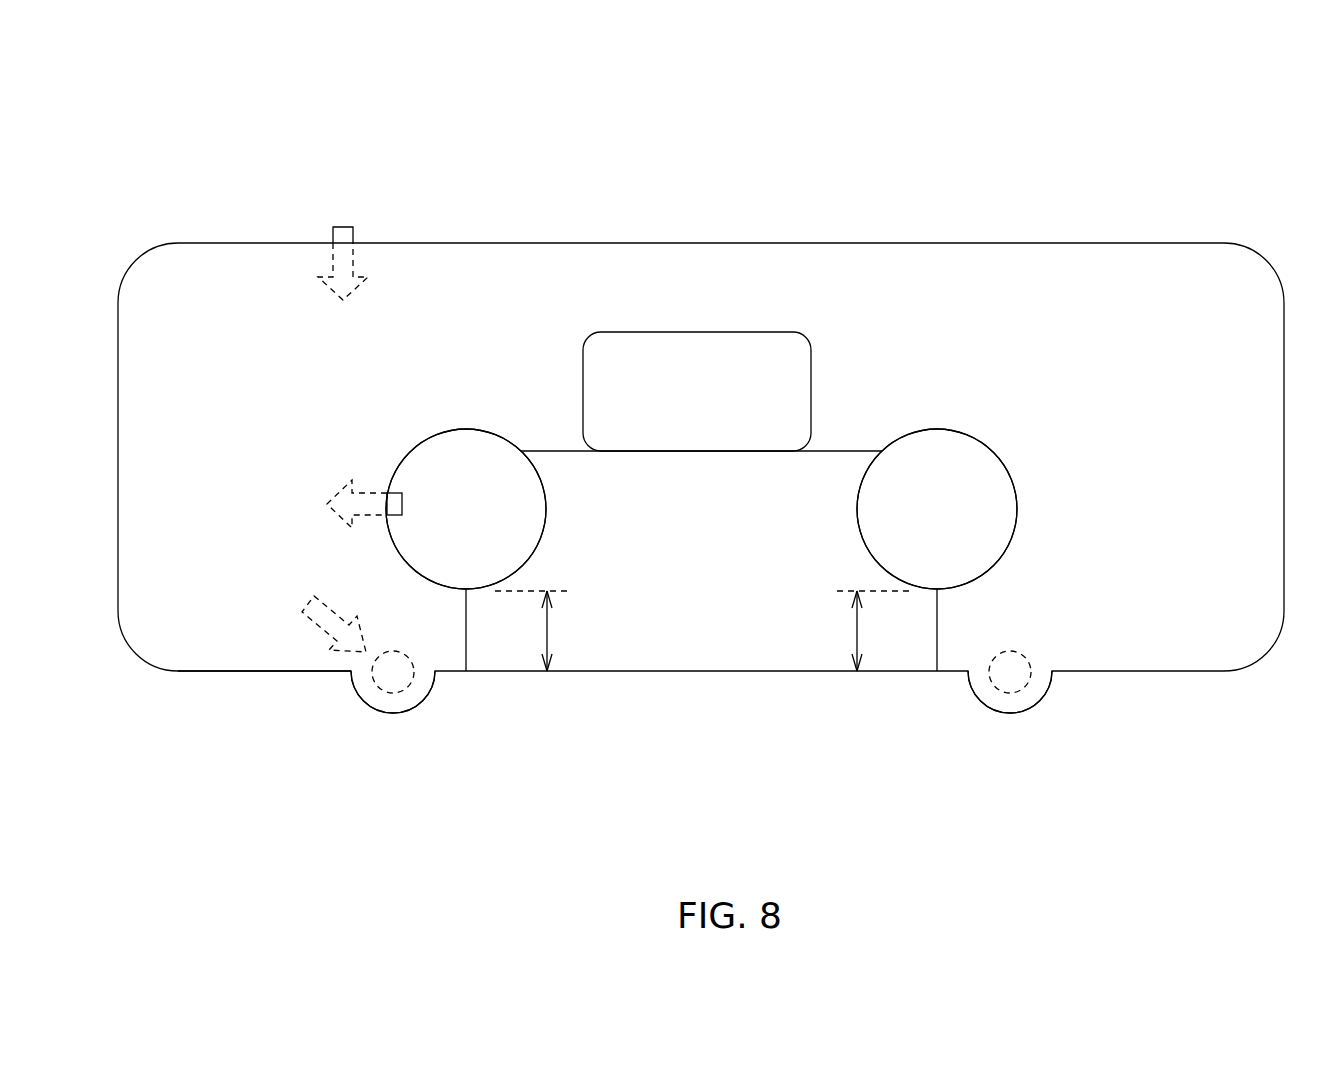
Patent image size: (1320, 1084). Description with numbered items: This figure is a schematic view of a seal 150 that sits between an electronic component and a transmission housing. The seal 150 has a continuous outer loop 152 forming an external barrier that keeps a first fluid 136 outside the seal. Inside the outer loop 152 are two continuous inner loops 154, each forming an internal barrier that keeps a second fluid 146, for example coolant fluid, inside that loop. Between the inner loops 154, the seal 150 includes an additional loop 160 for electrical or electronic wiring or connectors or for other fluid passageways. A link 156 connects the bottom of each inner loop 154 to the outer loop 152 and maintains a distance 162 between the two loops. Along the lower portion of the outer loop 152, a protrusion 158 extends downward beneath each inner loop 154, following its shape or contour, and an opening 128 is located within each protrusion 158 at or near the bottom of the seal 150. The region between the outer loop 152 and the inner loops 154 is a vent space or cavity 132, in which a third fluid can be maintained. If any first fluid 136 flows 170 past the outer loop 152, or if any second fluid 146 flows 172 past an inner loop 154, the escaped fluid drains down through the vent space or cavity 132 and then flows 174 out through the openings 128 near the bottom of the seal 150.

The seal 150 is at (347, 122).
The vent space or cavity 132 is at (960, 302).
The first fluid 136 is at (710, 171).
The outer loop 152 is at (178, 671).
The inner loop 154 is at (450, 428).
The second fluid 146 is at (489, 522).
The link 156 is at (466, 632).
The protrusion 158 is at (393, 713).
The opening 128 is at (410, 689).
The additional loop 160 is at (730, 332).
The distance 162 is at (549, 637).
The flow of first fluid past the outer loop 170 is at (355, 229).
The flow of second fluid past the inner loop 172 is at (345, 485).
The flow out through the opening 174 is at (300, 606).